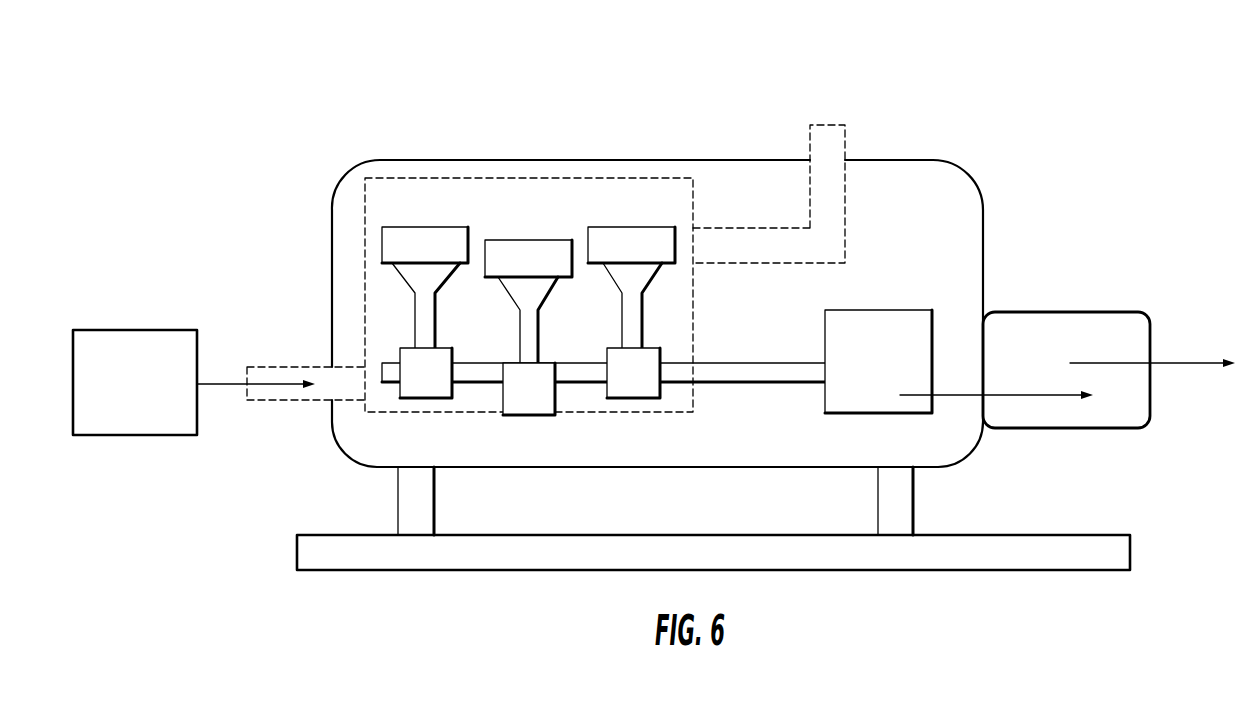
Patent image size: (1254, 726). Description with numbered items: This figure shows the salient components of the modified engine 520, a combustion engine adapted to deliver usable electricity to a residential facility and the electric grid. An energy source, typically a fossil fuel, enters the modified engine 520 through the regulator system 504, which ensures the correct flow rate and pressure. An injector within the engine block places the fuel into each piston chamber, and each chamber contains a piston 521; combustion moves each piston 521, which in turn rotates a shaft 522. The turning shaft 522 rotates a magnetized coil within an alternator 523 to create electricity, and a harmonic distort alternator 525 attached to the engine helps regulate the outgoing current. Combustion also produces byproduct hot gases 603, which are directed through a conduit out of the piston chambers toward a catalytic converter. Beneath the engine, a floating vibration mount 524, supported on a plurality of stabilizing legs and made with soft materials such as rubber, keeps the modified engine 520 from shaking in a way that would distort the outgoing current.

The regulator system 504 is at (194, 382).
The modified engine 520 is at (657, 313).
The piston 521 is at (428, 227).
The shaft 522 is at (787, 384).
The alternator 523 is at (959, 361).
The vibration mount 524 is at (713, 518).
The harmonic distort alternator 525 is at (1109, 370).
The hot gases 603 is at (827, 140).